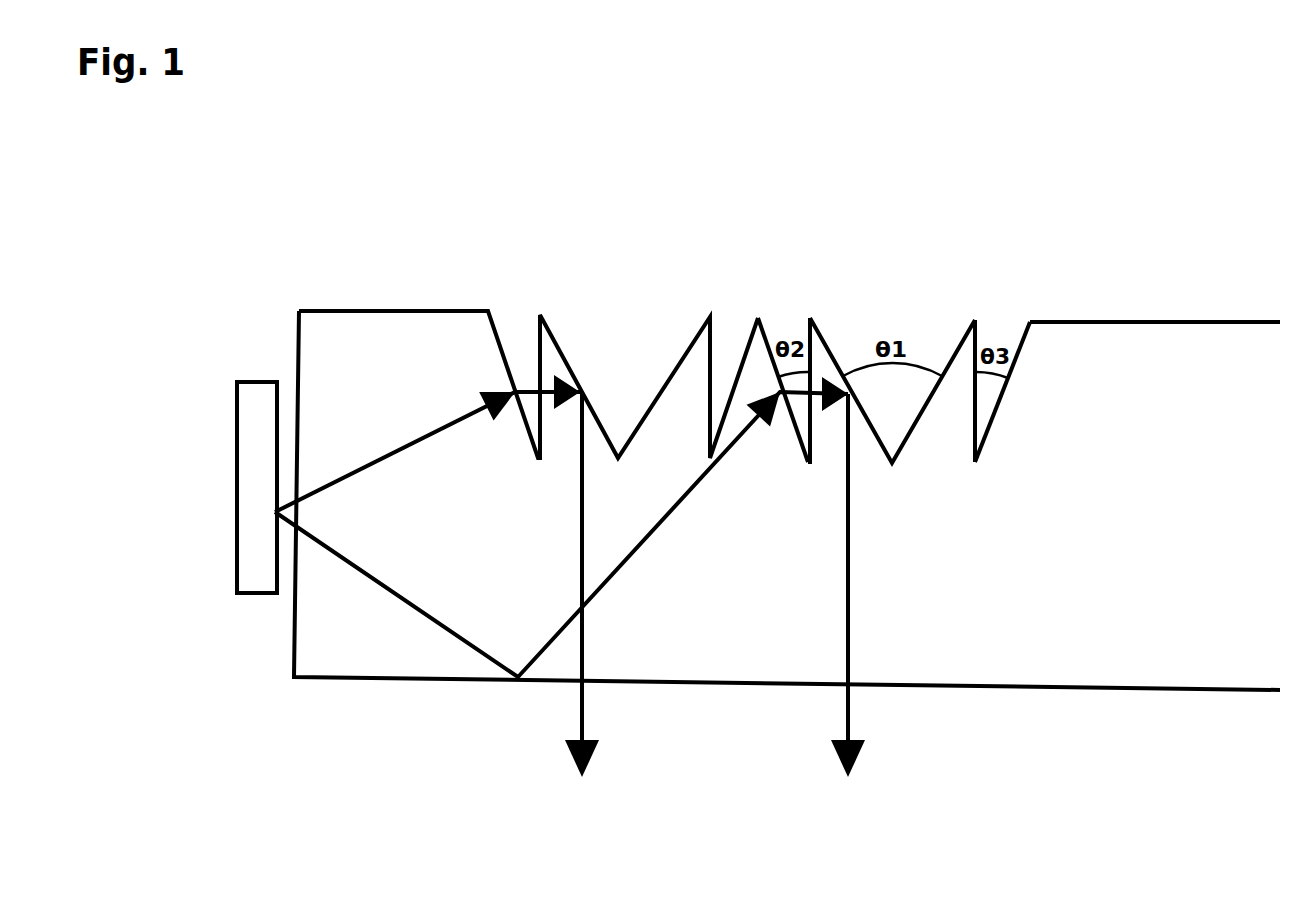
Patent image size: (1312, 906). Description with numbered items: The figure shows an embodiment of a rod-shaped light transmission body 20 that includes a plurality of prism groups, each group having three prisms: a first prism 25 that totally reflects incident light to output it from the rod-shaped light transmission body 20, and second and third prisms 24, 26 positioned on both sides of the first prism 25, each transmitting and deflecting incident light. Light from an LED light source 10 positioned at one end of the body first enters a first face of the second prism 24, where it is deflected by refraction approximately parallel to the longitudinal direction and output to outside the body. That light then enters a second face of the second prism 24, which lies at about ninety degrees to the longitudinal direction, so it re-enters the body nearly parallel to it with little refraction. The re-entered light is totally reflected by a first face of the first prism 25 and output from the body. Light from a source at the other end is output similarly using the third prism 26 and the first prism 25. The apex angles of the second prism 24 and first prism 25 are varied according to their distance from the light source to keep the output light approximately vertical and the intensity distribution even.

The LED light source 10 is at (248, 381).
The rod-shaped light transmission body 20 is at (1066, 543).
The second prism 24 is at (786, 308).
The first prism 25 is at (903, 305).
The third prism 26 is at (1011, 312).